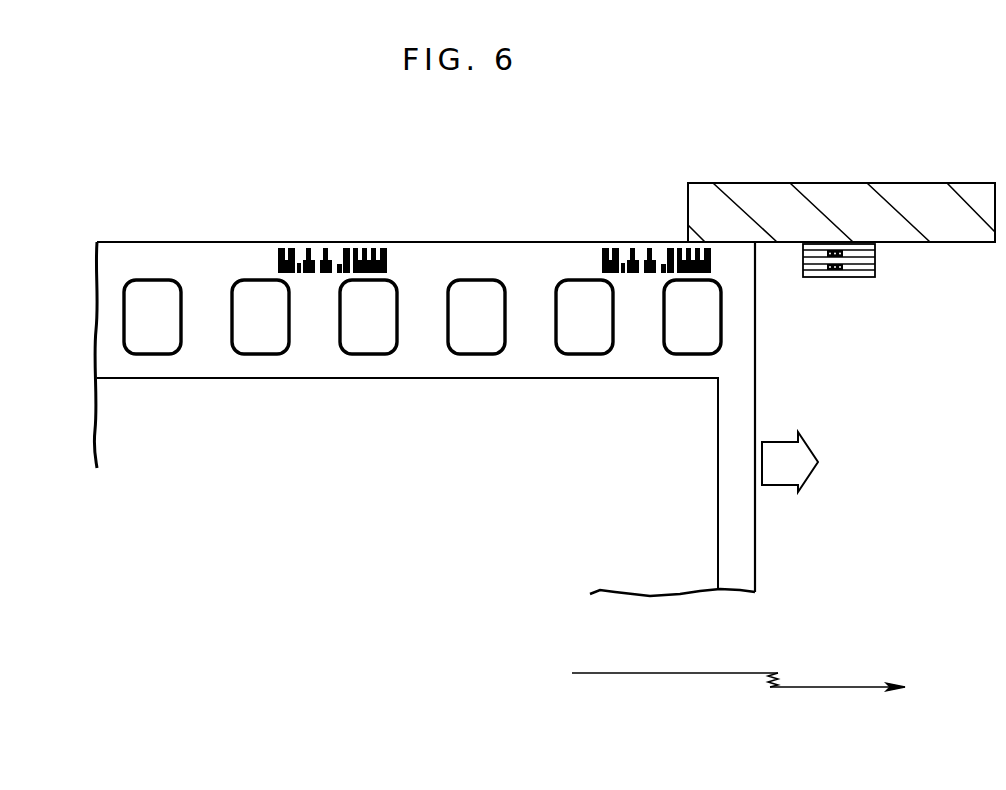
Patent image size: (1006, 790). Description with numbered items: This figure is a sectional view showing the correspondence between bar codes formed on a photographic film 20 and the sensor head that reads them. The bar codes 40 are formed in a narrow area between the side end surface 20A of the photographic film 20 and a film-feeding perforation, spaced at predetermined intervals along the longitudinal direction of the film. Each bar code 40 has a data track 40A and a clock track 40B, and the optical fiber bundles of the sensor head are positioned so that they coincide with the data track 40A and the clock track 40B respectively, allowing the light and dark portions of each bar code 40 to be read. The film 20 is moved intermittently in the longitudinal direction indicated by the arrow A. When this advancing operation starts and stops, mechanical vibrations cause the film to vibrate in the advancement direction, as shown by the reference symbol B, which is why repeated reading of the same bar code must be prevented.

The photographic film 20 is at (532, 253).
The side end surface 20A is at (480, 242).
The bar code 40 is at (394, 260).
The data track 40A is at (278, 252).
The clock track 40B is at (277, 267).
The arrow A is at (781, 450).
The reference symbol B is at (783, 681).